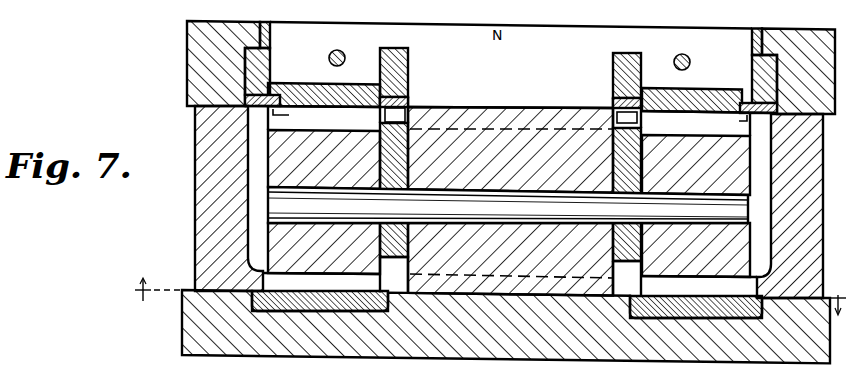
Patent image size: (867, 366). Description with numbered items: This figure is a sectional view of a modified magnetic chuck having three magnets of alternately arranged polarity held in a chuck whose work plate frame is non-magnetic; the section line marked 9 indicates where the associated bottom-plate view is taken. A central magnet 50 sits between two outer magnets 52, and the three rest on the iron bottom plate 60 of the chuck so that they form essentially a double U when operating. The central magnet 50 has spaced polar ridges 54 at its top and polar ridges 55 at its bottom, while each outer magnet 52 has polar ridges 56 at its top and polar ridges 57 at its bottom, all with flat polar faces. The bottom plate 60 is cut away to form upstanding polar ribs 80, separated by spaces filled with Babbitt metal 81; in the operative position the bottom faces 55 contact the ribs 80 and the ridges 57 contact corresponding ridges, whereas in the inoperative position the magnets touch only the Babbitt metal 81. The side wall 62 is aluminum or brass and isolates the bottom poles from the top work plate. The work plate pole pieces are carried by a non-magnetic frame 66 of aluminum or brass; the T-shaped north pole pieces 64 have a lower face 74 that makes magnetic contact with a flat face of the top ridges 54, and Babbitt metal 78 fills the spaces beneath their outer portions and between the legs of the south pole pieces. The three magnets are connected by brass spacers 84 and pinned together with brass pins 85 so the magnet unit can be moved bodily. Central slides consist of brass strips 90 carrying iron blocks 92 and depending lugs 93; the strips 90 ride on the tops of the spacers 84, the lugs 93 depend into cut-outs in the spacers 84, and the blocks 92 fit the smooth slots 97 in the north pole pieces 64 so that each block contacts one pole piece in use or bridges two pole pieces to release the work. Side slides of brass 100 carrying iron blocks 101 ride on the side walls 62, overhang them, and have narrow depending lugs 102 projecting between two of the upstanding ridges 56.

The non-magnetic frame 66 is at (190, 44).
The iron blocks 101 is at (247, 72).
The brass slides 100 is at (245, 100).
The Babbitt metal 78 is at (505, 98).
The side wall 62 is at (200, 130).
The iron bottom plate 60 is at (506, 326).
The Babbitt metal 81 is at (507, 305).
The outer magnets 52 is at (509, 191).
The central magnet 50 is at (510, 201).
The lower face 74 is at (472, 107).
The polar ridges 54 is at (522, 116).
The non-magnetic spacers 84 is at (510, 154).
The brass strips 90 is at (409, 100).
The depending lugs 93 is at (385, 118).
The iron blocks 92 is at (409, 67).
The slots 97 is at (380, 72).
The polar ridges 56 is at (511, 120).
The depending lugs 102 is at (510, 119).
The brass pins 85 is at (508, 205).
The polar ribs 80 is at (510, 288).
The polar ridges 57 is at (510, 286).
The polar ridges 55 is at (508, 291).
The north pole pieces 64 is at (503, 63).
The section line 9- 9 is at (490, 311).